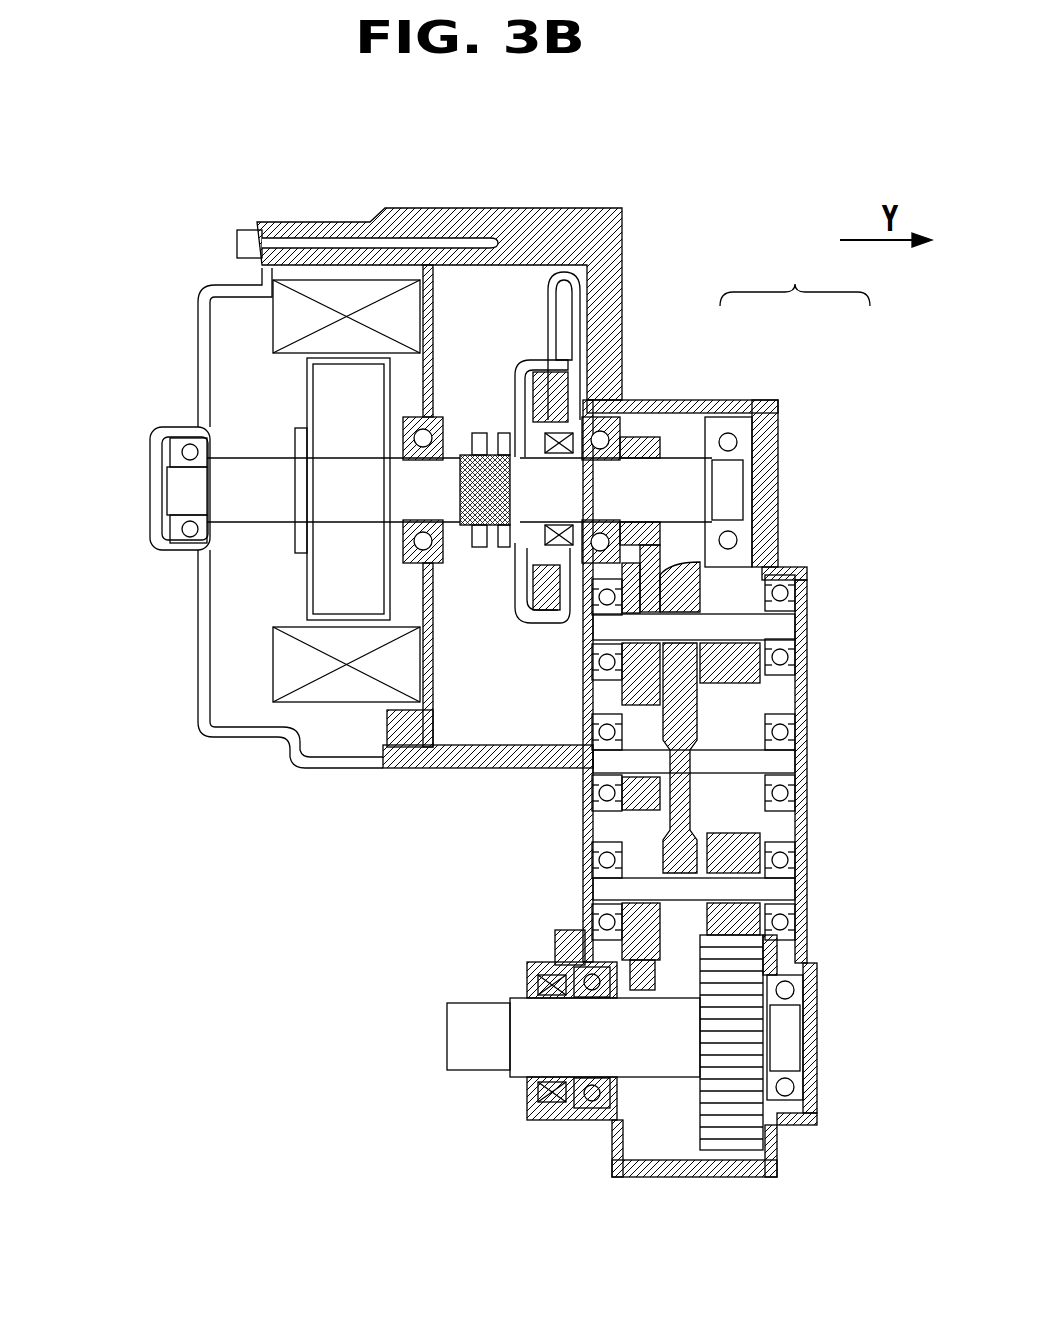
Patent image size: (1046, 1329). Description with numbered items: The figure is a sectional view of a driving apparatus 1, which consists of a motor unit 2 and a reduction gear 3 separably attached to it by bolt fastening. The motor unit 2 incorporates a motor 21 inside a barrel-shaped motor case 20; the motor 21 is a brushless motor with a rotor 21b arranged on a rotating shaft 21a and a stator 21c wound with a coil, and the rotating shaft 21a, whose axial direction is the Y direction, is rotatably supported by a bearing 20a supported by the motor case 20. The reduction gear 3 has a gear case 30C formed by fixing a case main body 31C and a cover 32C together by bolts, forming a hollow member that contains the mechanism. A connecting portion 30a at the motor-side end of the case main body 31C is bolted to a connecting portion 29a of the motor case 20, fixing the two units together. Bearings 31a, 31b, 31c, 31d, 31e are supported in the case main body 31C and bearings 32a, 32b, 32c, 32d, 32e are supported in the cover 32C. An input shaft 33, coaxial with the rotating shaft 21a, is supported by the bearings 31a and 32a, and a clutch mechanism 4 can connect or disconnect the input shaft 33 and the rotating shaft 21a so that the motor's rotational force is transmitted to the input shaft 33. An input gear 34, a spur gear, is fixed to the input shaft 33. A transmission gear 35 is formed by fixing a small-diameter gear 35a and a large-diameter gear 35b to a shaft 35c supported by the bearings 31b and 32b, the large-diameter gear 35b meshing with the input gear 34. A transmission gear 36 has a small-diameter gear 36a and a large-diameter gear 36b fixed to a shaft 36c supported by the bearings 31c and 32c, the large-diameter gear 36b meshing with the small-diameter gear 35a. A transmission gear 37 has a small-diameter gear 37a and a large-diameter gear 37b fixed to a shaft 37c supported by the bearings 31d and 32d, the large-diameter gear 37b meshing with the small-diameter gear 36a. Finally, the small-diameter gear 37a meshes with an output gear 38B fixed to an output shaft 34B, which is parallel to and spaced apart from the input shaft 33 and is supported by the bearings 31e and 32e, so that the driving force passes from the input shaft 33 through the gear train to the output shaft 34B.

The driving apparatus 1 is at (113, 258).
The motor unit 2 is at (165, 358).
The reduction gear 3 is at (648, 266).
The clutch mechanism 4 is at (515, 350).
The motor case 20 is at (198, 728).
The bearing 20a is at (190, 550).
The motor 21 is at (240, 332).
The rotating shaft 21a is at (258, 530).
The rotor 21b is at (300, 410).
The stator 21c is at (308, 357).
The connecting portion 29a is at (400, 775).
The connecting portion 30a is at (440, 770).
The gear case 30C is at (795, 268).
The bearing 31a is at (600, 428).
The bearing 31b is at (585, 672).
The bearing 31c is at (583, 728).
The case main body 31C is at (742, 400).
The bearing 31d is at (583, 850).
The bearing 31e is at (590, 1122).
The bearing 32a is at (778, 428).
The bearing 32b is at (800, 600).
The bearing 32c is at (800, 792).
The cover 32C is at (790, 400).
The bearing 32d is at (805, 930).
The bearing 32e is at (808, 1080).
The input shaft 33 is at (752, 490).
The input gear 34 is at (635, 437).
The output shaft 34B is at (490, 1078).
The transmission gear 35 is at (748, 676).
The small-diameter gear 35a is at (715, 580).
The large-diameter gear 35b is at (605, 608).
The shaft 35c is at (800, 640).
The transmission gear 36 is at (752, 824).
The small-diameter gear 36a is at (595, 790).
The large-diameter gear 36b is at (695, 682).
The shaft 36c is at (800, 760).
The transmission gear 37 is at (684, 978).
The small-diameter gear 37a is at (800, 905).
The large-diameter gear 37b is at (575, 946).
The shaft 37c is at (583, 892).
The output gear 38B is at (775, 1150).